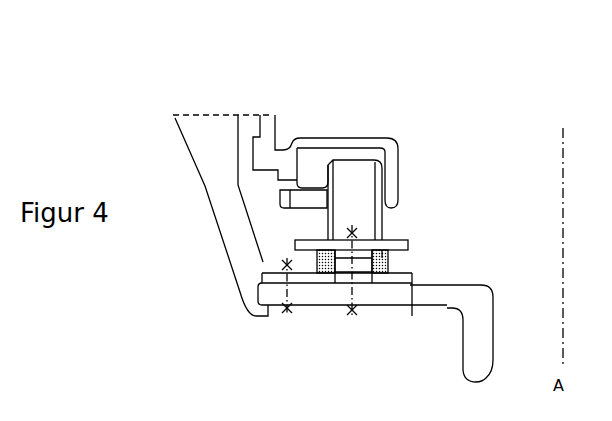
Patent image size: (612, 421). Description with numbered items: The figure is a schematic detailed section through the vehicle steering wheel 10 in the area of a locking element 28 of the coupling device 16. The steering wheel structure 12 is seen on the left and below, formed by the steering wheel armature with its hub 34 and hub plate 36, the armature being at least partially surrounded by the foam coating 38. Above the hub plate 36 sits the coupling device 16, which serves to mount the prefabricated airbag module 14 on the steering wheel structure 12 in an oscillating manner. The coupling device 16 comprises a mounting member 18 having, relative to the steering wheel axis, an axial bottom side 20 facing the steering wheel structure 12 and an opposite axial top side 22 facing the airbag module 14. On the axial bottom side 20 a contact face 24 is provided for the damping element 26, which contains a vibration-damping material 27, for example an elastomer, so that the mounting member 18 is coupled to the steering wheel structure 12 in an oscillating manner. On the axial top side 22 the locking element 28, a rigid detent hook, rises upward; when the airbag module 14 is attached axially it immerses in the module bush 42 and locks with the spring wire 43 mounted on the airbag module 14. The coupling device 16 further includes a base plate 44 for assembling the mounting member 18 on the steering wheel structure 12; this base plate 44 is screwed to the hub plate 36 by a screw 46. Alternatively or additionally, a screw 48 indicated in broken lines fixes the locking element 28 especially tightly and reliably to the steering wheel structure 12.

The vehicle steering wheel 10 is at (531, 74).
The steering wheel structure 12 is at (214, 316).
The airbag module 14 is at (265, 137).
The coupling device 16 is at (449, 170).
The mounting member 18 is at (410, 247).
The axial bottom side 20 is at (410, 257).
The axial top side 22 is at (410, 234).
The contact face 24 is at (355, 287).
The damping element 26 is at (325, 268).
The vibration-damping material 27 is at (380, 261).
The locking element 28 is at (318, 168).
The hub 34 is at (482, 333).
The hub plate 36 is at (320, 292).
The foam coating 38 is at (210, 158).
The module bush 42 is at (392, 173).
The spring wire 43 is at (312, 183).
The base plate 44 is at (381, 258).
The screw 46 is at (288, 288).
The screw 48 is at (357, 290).